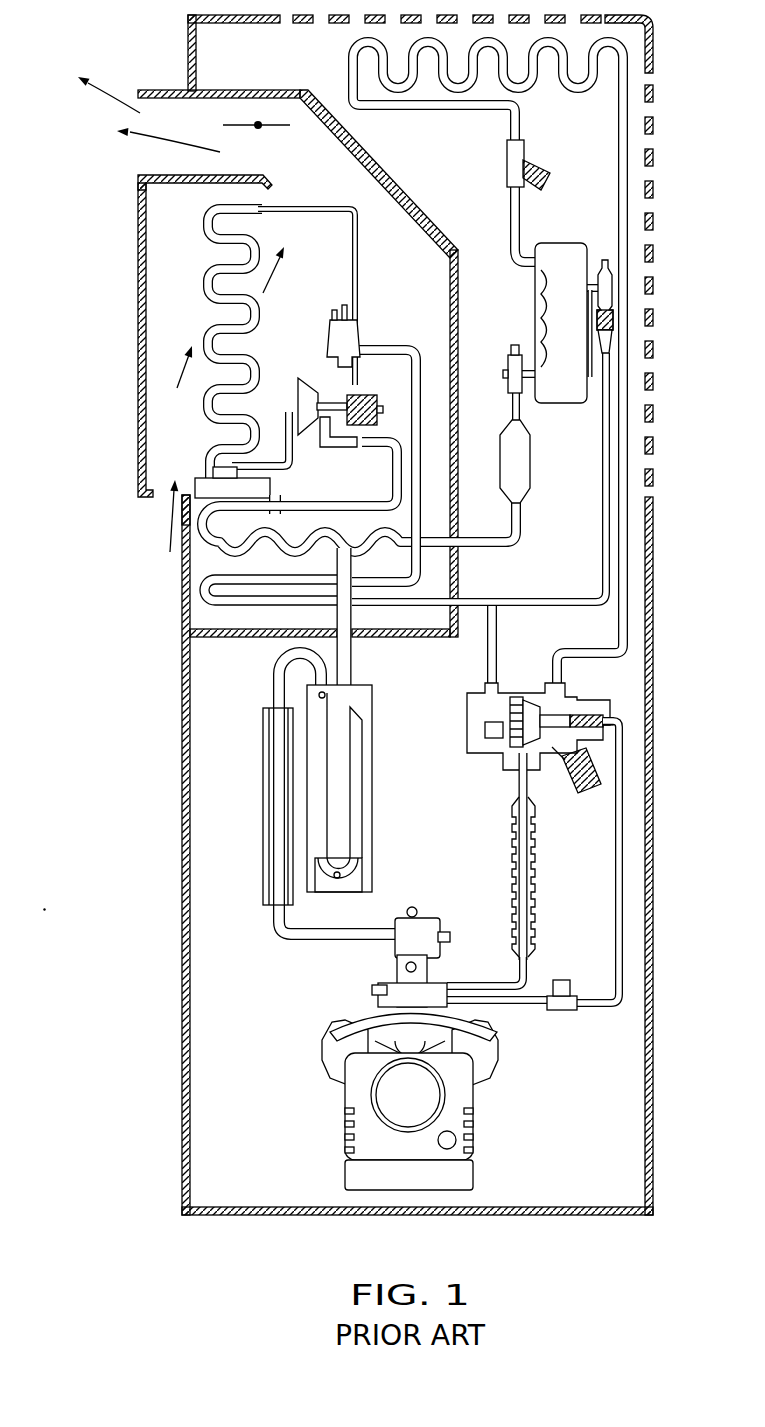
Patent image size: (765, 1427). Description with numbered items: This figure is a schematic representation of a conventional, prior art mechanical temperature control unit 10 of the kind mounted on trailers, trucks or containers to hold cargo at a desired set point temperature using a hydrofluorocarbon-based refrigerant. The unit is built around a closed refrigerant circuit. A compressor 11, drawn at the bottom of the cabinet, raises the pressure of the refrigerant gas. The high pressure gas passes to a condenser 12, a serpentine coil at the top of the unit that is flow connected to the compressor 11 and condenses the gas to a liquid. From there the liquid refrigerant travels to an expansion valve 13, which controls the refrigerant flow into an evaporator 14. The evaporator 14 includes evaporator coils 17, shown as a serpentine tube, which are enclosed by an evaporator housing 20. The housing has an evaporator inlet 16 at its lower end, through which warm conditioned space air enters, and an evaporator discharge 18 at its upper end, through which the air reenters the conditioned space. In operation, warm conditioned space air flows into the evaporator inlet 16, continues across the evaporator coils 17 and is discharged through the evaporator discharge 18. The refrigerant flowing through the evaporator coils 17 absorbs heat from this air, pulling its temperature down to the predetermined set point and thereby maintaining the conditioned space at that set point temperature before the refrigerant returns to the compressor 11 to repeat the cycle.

The mechanical temperature control unit 10 is at (150, 582).
The compressor 11 is at (546, 1143).
The condenser 12 is at (306, 51).
The expansion valve 13 is at (296, 368).
The evaporator 14 is at (172, 390).
The evaporator inlet 16 is at (155, 497).
The evaporator coils 17 is at (210, 273).
The evaporator discharge 18 is at (172, 176).
The evaporator housing 20 is at (118, 297).